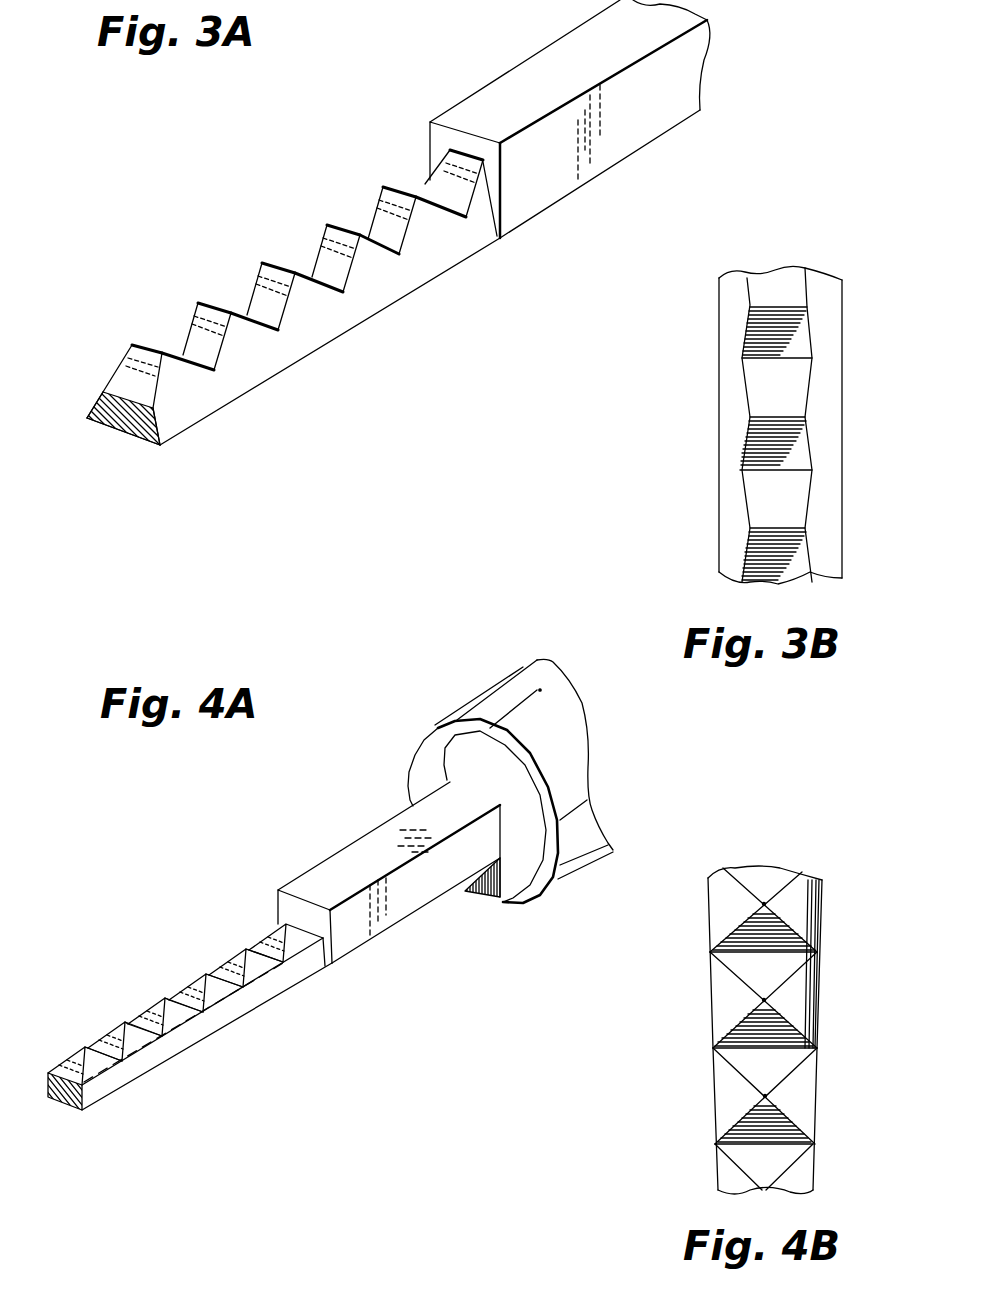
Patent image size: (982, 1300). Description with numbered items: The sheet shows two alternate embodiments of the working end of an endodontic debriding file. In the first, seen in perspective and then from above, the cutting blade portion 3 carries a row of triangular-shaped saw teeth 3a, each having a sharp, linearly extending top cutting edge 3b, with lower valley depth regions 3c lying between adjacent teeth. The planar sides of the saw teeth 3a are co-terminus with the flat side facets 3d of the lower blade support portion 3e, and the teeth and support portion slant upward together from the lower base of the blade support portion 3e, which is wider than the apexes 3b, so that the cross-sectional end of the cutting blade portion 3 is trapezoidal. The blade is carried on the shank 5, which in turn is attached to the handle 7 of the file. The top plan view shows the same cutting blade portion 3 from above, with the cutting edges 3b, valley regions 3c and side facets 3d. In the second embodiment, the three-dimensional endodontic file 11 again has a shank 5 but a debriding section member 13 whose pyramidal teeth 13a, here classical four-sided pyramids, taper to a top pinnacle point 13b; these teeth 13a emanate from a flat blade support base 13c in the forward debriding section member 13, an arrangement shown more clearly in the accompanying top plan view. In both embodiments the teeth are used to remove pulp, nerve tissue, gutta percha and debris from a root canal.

In FIG. 3A, the cutting blade portion 3 is at (90, 262).
In FIG. 3A, the saw teeth 3a is at (178, 375).
In FIG. 3A, the top cutting edges 3b is at (343, 228).
In FIG. 3B, the top cutting edges 3b is at (770, 307).
In FIG. 3A, the lower valley depth regions 3c is at (257, 318).
In FIG. 3B, the lower valley depth regions 3c is at (800, 355).
In FIG. 3A, the flat side facets 3d is at (88, 416).
In FIG. 3B, the flat side facets 3d is at (728, 465).
In FIG. 3A, the lower blade support portions 3e is at (123, 437).
In FIG. 3A, the shank 5 is at (516, 88).
In FIG. 4A, the shank 5 is at (420, 887).
In FIG. 4A, the handle 7 is at (487, 705).
In FIG. 4A, the three-dimensional endodontic file 11 is at (200, 868).
In FIG. 4A, the debriding section member 13 is at (140, 993).
In FIG. 4B, the debriding section member 13 is at (830, 900).
In FIG. 4A, the pyramidal teeth 13a is at (135, 1042).
In FIG. 4B, the pyramidal teeth 13a is at (710, 915).
In FIG. 4A, the point 13b is at (192, 930).
In FIG. 4B, the point 13b is at (765, 897).
In FIG. 4A, the flat blade support base 13c is at (98, 1090).